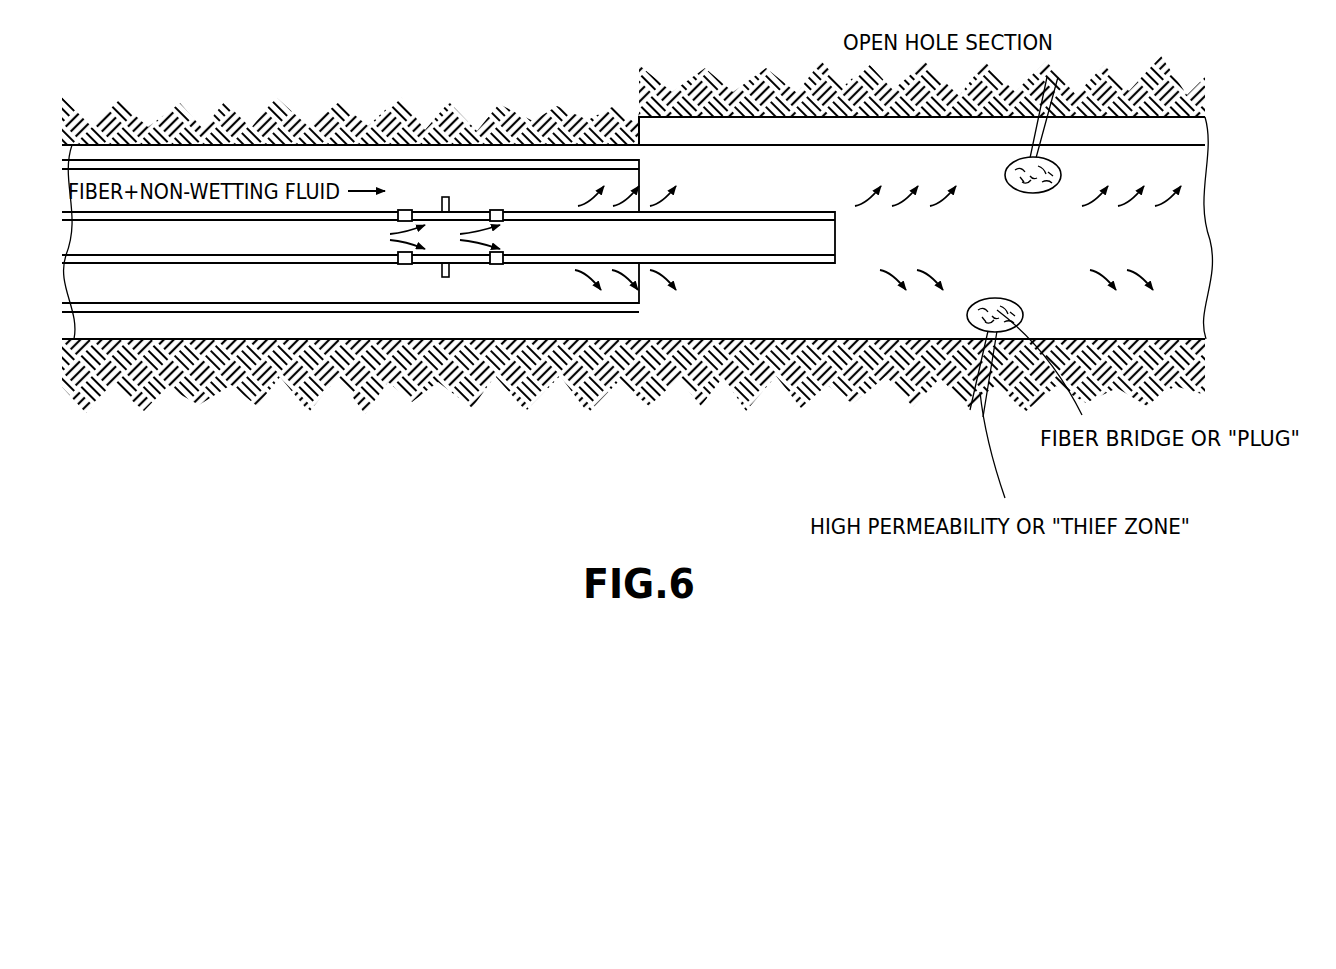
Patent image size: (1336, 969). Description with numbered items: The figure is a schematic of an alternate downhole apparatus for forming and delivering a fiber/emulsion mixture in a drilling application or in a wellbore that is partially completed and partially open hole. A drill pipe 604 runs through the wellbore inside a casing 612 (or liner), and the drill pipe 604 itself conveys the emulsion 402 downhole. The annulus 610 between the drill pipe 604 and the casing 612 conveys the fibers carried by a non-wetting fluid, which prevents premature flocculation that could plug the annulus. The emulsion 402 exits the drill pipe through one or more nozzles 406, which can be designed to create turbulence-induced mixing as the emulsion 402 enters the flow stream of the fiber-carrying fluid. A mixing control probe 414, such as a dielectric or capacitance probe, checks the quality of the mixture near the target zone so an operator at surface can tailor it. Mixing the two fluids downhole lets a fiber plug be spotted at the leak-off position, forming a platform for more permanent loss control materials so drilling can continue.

The emulsion 402 is at (375, 238).
The nozzle 406 is at (405, 212).
The mixing control probe 414 is at (447, 197).
The drill pipe 604 is at (185, 260).
The annulus 610 is at (430, 287).
The casing 612 is at (168, 167).